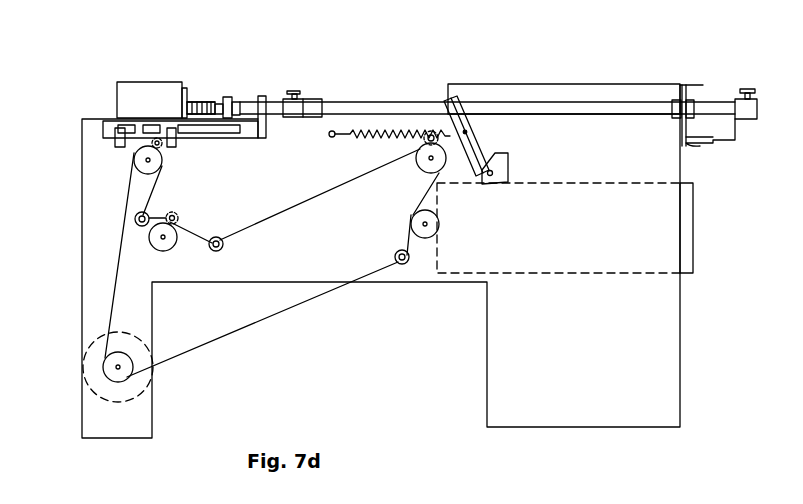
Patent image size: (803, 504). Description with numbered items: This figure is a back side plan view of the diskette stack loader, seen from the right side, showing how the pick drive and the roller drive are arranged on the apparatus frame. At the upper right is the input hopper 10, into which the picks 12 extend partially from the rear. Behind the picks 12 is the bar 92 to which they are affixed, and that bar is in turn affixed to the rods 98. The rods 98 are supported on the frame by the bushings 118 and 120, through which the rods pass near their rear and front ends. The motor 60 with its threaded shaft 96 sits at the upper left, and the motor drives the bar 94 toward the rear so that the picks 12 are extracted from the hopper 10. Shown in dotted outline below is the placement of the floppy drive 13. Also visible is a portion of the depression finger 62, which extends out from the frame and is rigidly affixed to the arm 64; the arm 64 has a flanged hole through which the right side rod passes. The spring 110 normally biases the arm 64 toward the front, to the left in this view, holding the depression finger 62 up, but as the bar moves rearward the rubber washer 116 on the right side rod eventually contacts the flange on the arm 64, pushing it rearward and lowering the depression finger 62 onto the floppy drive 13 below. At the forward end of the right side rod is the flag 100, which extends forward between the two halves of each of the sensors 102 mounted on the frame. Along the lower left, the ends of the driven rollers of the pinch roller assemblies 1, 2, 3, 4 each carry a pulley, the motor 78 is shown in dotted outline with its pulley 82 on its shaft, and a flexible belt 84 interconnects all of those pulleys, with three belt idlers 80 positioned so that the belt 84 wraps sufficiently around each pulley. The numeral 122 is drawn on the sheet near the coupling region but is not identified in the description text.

The pinch roller assembly 1 is at (417, 143).
The pinch roller assembly 2 is at (166, 151).
The pinch roller assembly 3 is at (388, 213).
The pinch roller assembly 4 is at (197, 223).
The input hopper 10 is at (665, 85).
The picks 12 is at (736, 147).
The floppy drive 13 is at (693, 223).
The motor 60 is at (168, 82).
The depression finger 62 is at (500, 183).
The arm 64 is at (473, 125).
The motor 78 is at (92, 363).
The belt idlers 80 is at (135, 222).
The pulley 82 is at (117, 338).
The flexible belt 84 is at (295, 312).
The bar 92 is at (757, 108).
The bar 94 is at (292, 97).
The threaded shaft 96 is at (200, 102).
The rods 98 is at (512, 110).
The flag 100 is at (207, 142).
The sensors 102 is at (172, 128).
The spring 110 is at (367, 127).
The rubber washer 116 is at (318, 100).
The bushing 118 is at (676, 118).
The bushing 120 is at (232, 104).
The coupling sleeve 122 is at (222, 104).